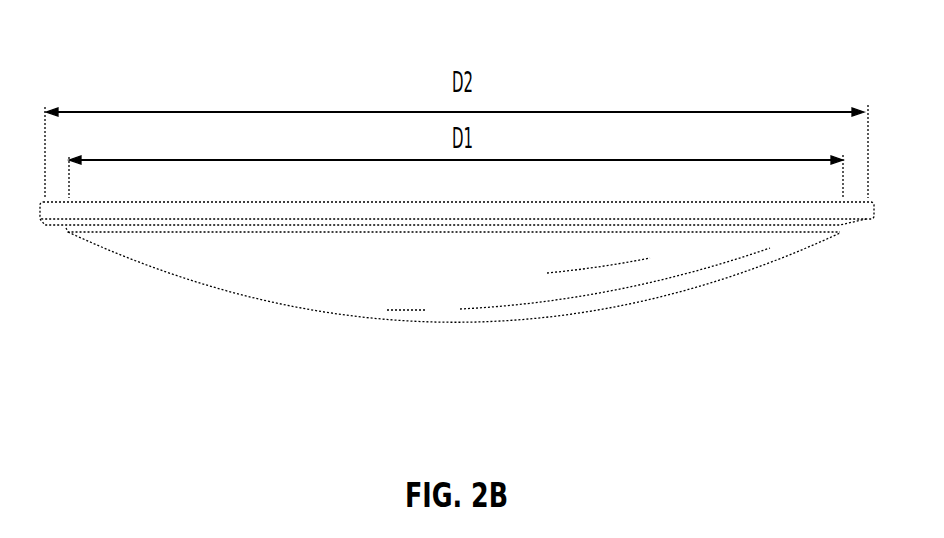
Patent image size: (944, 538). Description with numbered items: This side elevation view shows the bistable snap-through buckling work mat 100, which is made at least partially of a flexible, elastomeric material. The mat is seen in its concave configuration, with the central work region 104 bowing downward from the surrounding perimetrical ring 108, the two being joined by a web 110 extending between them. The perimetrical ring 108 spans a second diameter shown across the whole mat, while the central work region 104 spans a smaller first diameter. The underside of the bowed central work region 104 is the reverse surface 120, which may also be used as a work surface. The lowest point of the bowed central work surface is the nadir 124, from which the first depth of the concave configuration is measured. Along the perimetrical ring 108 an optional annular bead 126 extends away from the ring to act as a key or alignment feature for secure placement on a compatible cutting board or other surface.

The bistable snap-through buckling work mat 100 is at (739, 68).
The central work region 104 is at (642, 289).
The perimetrical ring 108 is at (177, 212).
The web 110 is at (842, 226).
The reverse surface 120 is at (537, 322).
The nadir 124 is at (452, 323).
The annular bead 126 is at (47, 221).